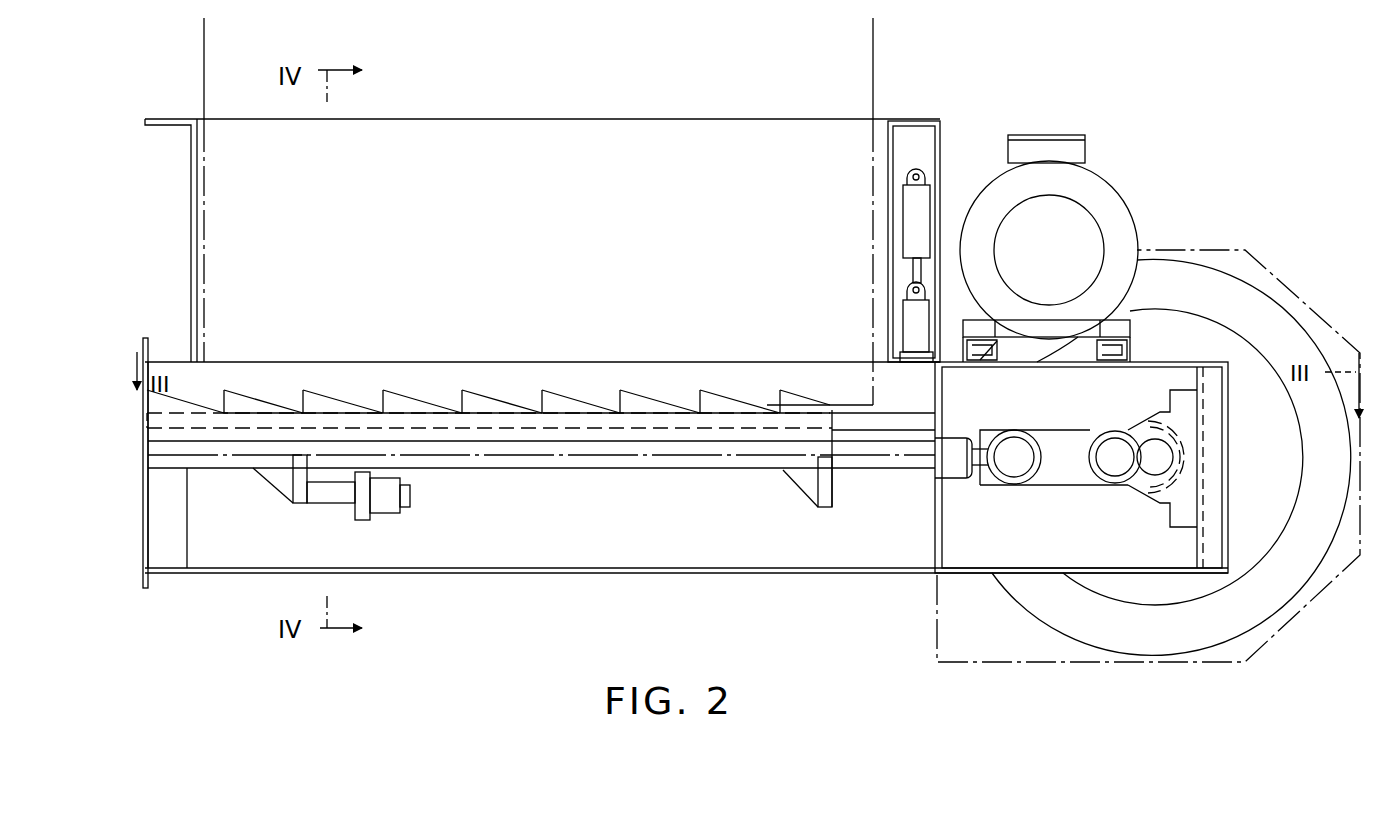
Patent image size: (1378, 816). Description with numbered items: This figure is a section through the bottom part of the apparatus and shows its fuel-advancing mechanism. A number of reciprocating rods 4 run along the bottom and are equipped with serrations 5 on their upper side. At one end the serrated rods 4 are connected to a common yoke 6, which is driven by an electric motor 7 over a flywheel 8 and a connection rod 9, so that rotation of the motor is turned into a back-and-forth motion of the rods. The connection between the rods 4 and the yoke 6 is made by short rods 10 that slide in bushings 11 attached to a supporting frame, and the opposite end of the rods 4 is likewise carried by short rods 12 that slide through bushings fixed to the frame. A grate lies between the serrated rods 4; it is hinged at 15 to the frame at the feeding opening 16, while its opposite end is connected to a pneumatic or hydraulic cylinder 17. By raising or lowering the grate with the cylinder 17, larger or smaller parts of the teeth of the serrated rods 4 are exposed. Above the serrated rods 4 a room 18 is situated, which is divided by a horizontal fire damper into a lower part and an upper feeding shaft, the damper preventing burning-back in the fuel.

The reciprocating rods 4 is at (392, 435).
The serrations 5 is at (568, 395).
The common yoke 6 is at (980, 482).
The electric motor 7 is at (1120, 205).
The flywheel 8 is at (1188, 272).
The connection rod 9 is at (1072, 463).
The short rods 10 is at (905, 430).
The bushings 11 is at (955, 445).
The short rods 12 is at (330, 490).
The hinge 15 is at (172, 413).
The feeding opening 16 is at (187, 360).
The pneumatic or hydraulic cylinder 17 is at (925, 192).
The room 18 is at (207, 227).